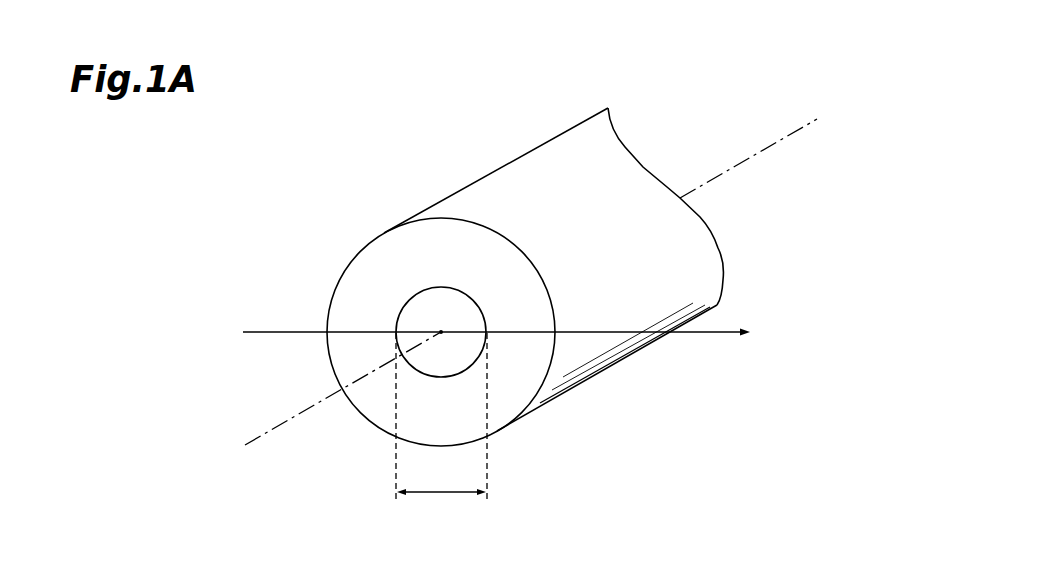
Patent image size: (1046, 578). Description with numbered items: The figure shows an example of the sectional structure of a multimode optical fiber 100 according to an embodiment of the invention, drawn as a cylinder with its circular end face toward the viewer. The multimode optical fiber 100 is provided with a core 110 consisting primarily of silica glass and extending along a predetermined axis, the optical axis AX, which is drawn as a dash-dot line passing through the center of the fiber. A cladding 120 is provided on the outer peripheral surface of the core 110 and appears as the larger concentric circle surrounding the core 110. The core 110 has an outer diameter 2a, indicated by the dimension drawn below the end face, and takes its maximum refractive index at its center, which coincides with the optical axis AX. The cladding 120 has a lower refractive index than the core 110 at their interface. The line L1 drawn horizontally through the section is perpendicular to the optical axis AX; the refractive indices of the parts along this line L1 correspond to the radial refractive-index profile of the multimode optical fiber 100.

The multimode optical fiber 100 is at (456, 144).
The core 110 is at (420, 327).
The cladding 120 is at (373, 267).
The line L1 is at (510, 333).
The optical axis AX is at (510, 290).
The outer diameter 2a is at (441, 426).